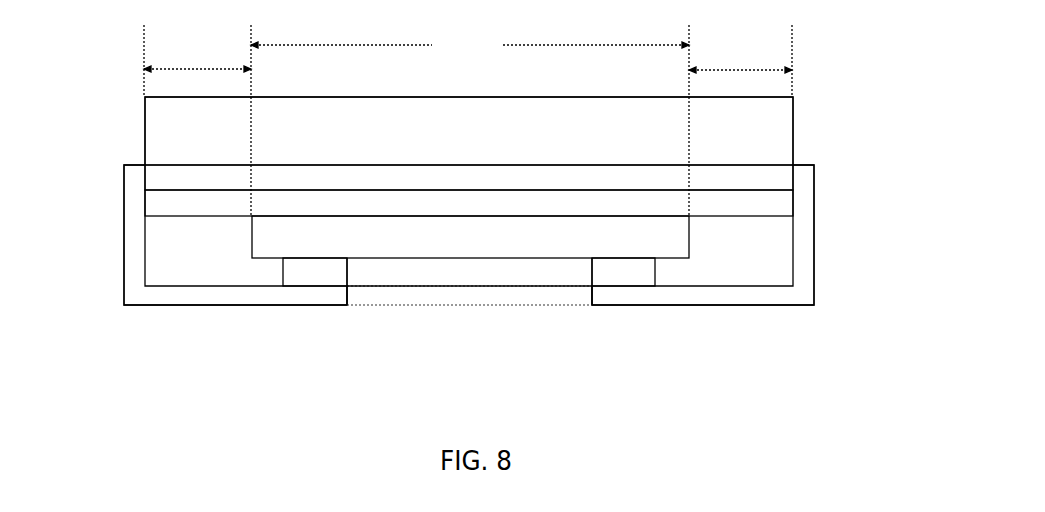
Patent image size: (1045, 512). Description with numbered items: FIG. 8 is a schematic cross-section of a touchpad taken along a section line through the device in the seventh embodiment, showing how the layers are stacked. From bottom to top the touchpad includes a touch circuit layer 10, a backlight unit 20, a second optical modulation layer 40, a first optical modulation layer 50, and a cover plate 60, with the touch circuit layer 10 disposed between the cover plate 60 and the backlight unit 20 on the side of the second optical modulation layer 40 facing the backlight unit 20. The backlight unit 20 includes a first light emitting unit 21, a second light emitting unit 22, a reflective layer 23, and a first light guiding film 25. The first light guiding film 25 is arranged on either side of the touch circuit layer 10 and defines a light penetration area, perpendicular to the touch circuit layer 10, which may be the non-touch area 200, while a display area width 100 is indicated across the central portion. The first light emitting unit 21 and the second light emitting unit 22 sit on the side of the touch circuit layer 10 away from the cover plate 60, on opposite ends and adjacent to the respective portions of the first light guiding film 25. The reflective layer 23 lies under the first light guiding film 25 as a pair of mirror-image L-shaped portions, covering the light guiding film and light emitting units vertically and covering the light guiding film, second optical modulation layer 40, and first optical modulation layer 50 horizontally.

The touch circuit layer 10 is at (483, 250).
The backlight unit 20 is at (818, 207).
The first light emitting unit 21 is at (348, 272).
The second light emitting unit 22 is at (592, 272).
The reflective layer 23 is at (124, 283).
The first light guiding film 25 is at (250, 277).
The second optical modulation layer 40 is at (145, 205).
The first optical modulation layer 50 is at (795, 178).
The cover plate 60 is at (145, 138).
The display area width 100 is at (470, 120).
The non-touch area 200 is at (468, 61).